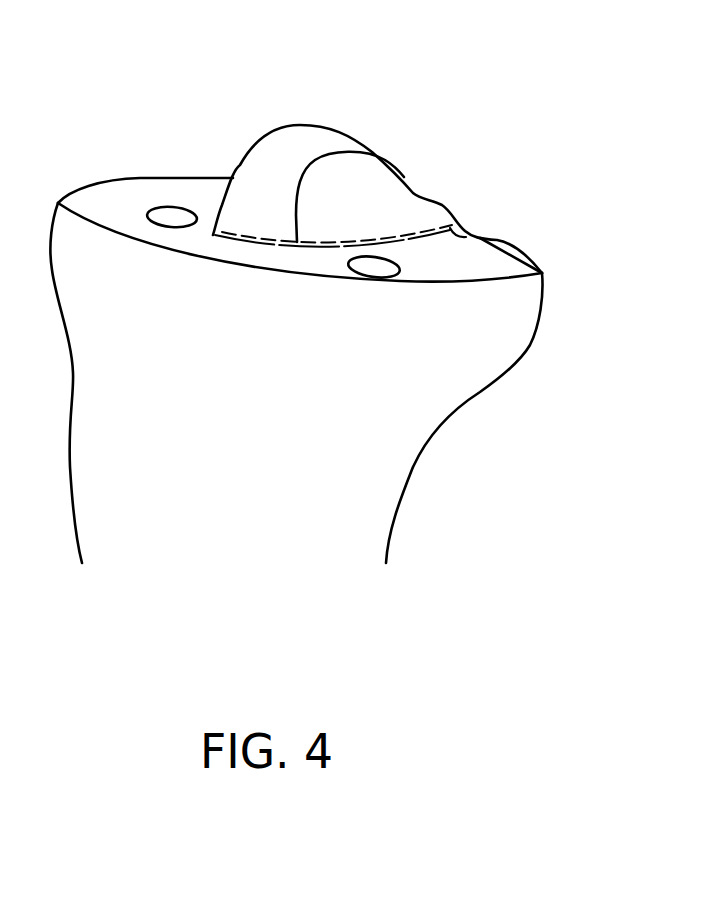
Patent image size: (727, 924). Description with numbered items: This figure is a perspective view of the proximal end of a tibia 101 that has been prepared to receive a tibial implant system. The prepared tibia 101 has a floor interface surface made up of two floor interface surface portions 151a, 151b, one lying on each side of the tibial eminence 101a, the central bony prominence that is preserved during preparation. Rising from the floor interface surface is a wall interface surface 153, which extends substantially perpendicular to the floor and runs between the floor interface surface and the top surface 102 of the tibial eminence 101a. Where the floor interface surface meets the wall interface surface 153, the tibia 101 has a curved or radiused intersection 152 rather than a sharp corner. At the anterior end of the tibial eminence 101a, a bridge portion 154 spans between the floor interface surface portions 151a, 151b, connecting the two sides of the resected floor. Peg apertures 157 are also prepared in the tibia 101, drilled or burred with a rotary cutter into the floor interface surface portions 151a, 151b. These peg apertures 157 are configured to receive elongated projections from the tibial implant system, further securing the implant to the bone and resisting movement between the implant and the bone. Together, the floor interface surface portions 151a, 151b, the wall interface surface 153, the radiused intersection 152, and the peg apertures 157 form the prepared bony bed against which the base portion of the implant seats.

The tibia 101 is at (417, 428).
The tibial eminence 101a is at (265, 223).
The top surface 102 is at (300, 137).
The floor interface surface portion 151a is at (468, 262).
The floor interface surface portion 151b is at (97, 203).
The curved or radiused intersection 152 is at (472, 238).
The wall interface surface 153 is at (385, 183).
The bridge portion 154 is at (203, 243).
The peg apertures 157 is at (172, 217).